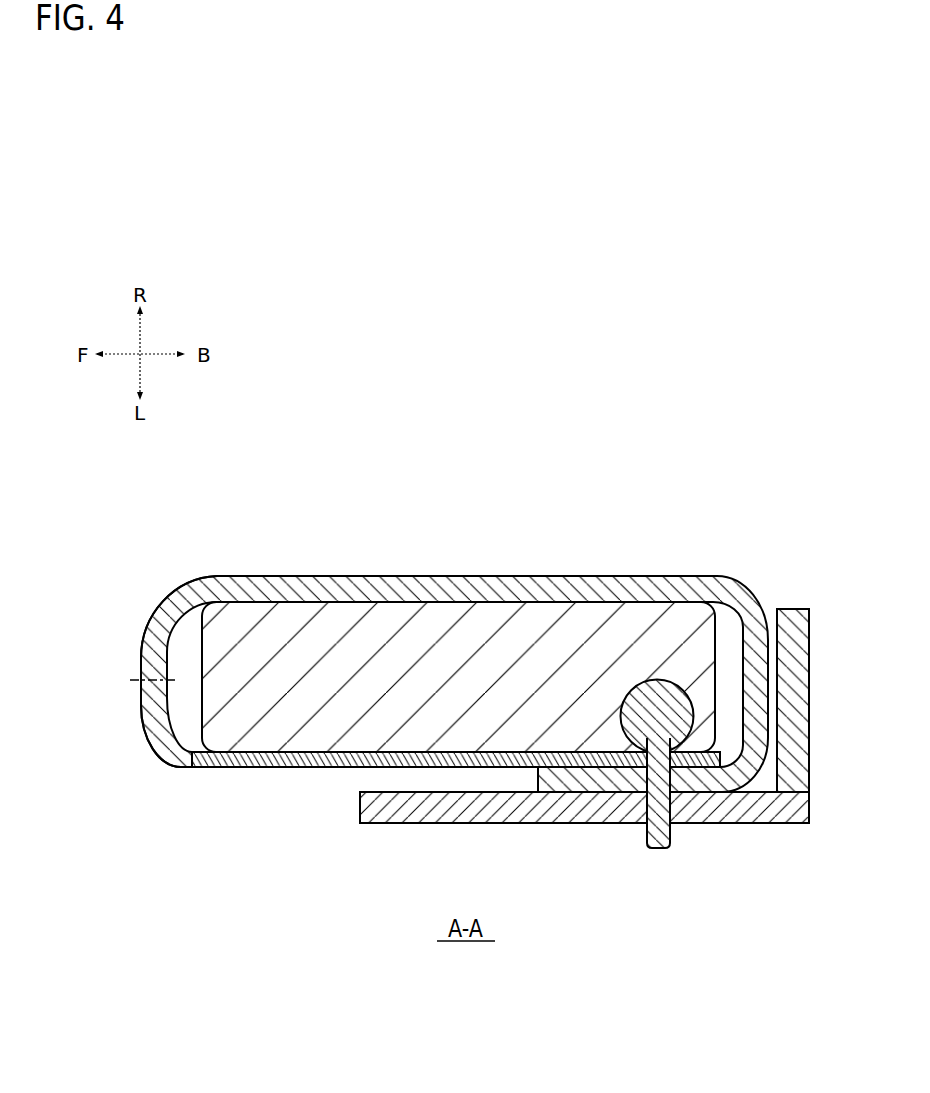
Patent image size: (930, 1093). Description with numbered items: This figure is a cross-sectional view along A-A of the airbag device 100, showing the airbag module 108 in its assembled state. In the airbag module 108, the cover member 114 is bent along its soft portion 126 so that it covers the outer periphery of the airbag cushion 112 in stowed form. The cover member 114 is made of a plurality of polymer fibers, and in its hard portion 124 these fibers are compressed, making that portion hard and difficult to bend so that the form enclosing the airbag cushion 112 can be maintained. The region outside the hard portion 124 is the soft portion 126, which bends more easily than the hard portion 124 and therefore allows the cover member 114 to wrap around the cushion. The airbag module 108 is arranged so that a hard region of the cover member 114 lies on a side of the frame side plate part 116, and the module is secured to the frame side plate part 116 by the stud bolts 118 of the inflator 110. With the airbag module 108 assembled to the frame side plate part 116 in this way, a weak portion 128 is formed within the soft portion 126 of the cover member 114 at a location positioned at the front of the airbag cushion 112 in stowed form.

The airbag device 100 is at (249, 489).
The airbag module 108 is at (497, 577).
The inflator 110 is at (644, 680).
The airbag cushion 112 is at (357, 618).
The cover member 114 is at (184, 591).
The frame side plate part 116 is at (550, 826).
The stud bolts 118 is at (660, 851).
The hard portion 124 is at (316, 767).
The soft portion 126 is at (151, 624).
The weak portion 128 is at (135, 687).